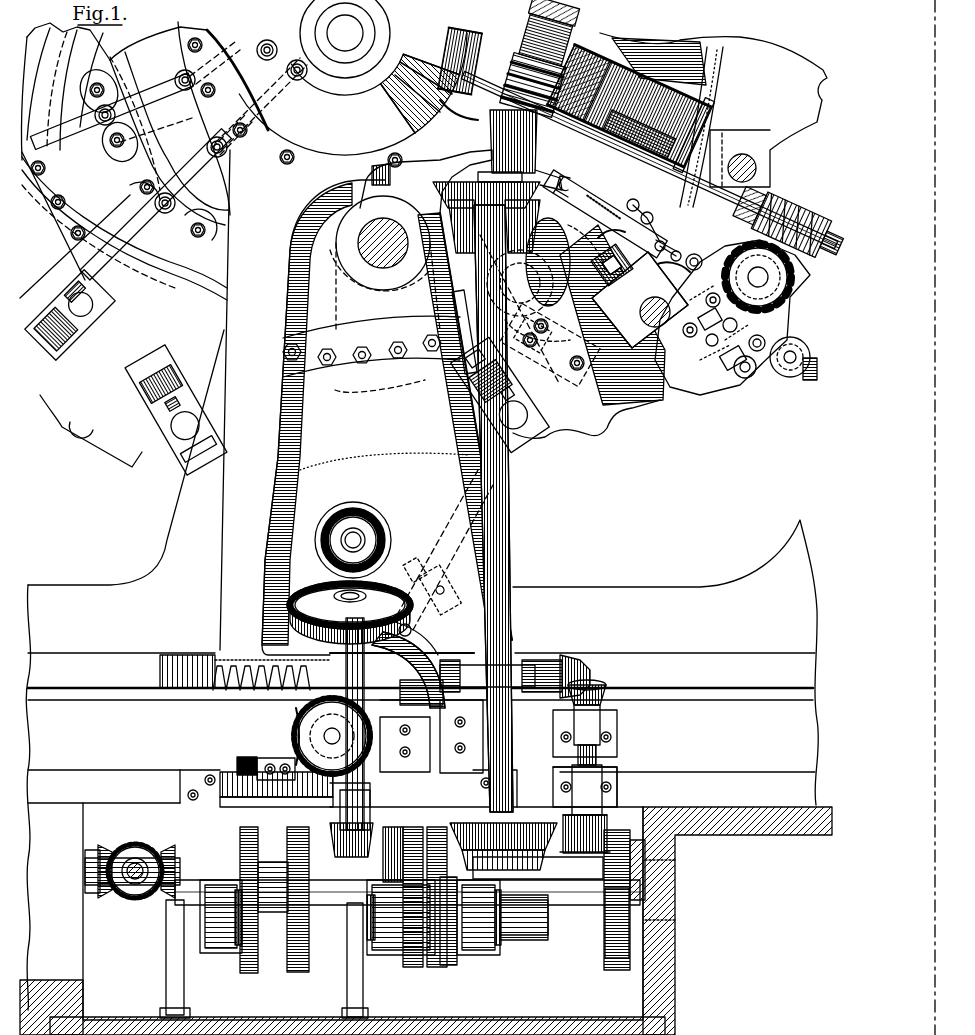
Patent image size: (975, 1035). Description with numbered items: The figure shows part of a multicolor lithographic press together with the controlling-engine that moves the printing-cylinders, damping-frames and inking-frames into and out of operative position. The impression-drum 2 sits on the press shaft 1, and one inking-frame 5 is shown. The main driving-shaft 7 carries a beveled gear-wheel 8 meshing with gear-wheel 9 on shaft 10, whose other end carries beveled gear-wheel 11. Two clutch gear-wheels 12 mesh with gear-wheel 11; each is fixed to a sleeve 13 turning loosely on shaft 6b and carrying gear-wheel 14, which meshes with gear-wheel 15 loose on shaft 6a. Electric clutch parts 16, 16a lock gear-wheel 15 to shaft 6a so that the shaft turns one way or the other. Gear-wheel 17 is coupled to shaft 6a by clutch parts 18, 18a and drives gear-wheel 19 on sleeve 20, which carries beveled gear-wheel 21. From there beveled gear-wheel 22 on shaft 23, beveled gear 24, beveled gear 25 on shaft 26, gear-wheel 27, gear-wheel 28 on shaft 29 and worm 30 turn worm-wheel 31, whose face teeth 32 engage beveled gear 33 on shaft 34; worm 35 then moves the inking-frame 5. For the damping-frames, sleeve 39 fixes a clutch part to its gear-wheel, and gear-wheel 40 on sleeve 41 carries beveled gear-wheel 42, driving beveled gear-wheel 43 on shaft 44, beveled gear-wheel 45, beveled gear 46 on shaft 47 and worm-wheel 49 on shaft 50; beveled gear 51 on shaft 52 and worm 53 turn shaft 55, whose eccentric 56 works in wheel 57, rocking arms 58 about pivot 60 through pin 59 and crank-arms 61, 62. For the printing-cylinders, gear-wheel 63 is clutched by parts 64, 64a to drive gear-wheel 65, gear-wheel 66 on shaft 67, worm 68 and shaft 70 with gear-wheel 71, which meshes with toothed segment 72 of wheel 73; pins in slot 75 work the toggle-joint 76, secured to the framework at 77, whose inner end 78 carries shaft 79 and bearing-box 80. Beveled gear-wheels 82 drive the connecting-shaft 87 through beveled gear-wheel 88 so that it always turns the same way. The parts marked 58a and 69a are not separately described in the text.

The shaft 1 is at (332, 28).
The impression-drum 2 is at (718, 116).
The inking-frame 5 is at (788, 320).
The shaft 6a is at (522, 925).
The shaft 6b is at (545, 880).
The main driving-shaft 7 is at (353, 540).
The beveled gear-wheel 8 is at (368, 522).
The gear-wheel 9 is at (266, 599).
The shaft 10 is at (330, 668).
The beveled gear-wheel 11 is at (372, 835).
The clutch gear-wheels 12 is at (398, 828).
The sleeve 13 is at (425, 838).
The gear-wheel 14 is at (455, 838).
The gear-wheel 15 is at (290, 847).
The electric clutch part 16 is at (355, 960).
The electric clutch part 16a is at (345, 958).
The gear-wheel 17 is at (448, 968).
The electric clutch part 18 is at (478, 955).
The electric clutch part 18a is at (472, 962).
The gear-wheel 19 is at (503, 843).
The sleeve 20 is at (503, 858).
The beveled gear-wheel 21 is at (524, 913).
The beveled gear-wheel 22 is at (566, 800).
The shaft 23 is at (512, 606).
The beveled gear 24 is at (398, 242).
The beveled gear 25 is at (452, 282).
The shaft 26 is at (413, 160).
The gear-wheel 27 is at (538, 222).
The gear-wheel 28 is at (545, 193).
The shaft 29 is at (536, 140).
The worm 30 is at (596, 72).
The worm-wheel 31 is at (471, 61).
The teeth 32 is at (452, 40).
The beveled gear 33 is at (459, 111).
The shaft 34 is at (510, 75).
The worm 35 is at (792, 218).
The sleeve 39 is at (650, 915).
The gear-wheel 40 is at (640, 838).
The sleeve 41 is at (618, 832).
The beveled gear-wheel 42 is at (660, 865).
The beveled gear-wheel 43 is at (585, 840).
The shaft 44 is at (602, 760).
The beveled gear-wheel 45 is at (606, 690).
The beveled gear 46 is at (580, 662).
The shaft 47 is at (525, 663).
The worm-wheel 49 is at (345, 630).
The shaft 50 is at (410, 643).
The beveled gear 51 is at (425, 632).
The shaft 52 is at (447, 558).
The worm 53 is at (590, 340).
The shaft 55 is at (528, 279).
The eccentric 56 is at (792, 282).
The wheel 57 is at (522, 348).
The arms 58 is at (605, 214).
The gear 58a is at (612, 955).
The pin 59 is at (600, 196).
The pivot 60 is at (663, 268).
The crank-arm 61 is at (640, 212).
The crank-arm 62 is at (674, 252).
The gear-wheel 63 is at (250, 975).
The electric clutch part 64 is at (222, 950).
The electric clutch part 64a is at (237, 962).
The gear-wheel 65 is at (240, 838).
The gear-wheel 66 is at (248, 754).
The shaft 67 is at (285, 797).
The worm 68 is at (312, 800).
The bracket 69a is at (276, 756).
The shaft 70 is at (332, 736).
The gear-wheel 71 is at (298, 722).
The toothed segment 72 is at (258, 680).
The wheel 73 is at (385, 690).
The slot 75 is at (175, 72).
The toggle-joint 76 is at (138, 102).
The framework attachment 77 is at (38, 130).
The inner end of toggle-joint 78 is at (266, 40).
The shaft 79 is at (82, 135).
The bearing-box 80 is at (70, 346).
The beveled gear-wheels 82 is at (104, 846).
The connecting-shaft 87 is at (132, 890).
The beveled gear-wheel 88 is at (140, 846).